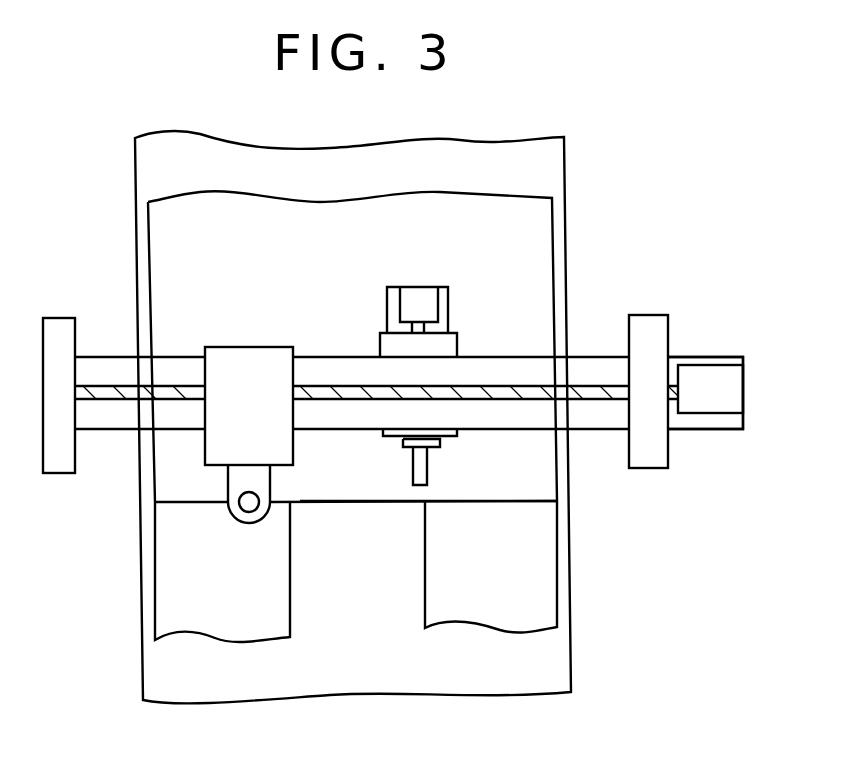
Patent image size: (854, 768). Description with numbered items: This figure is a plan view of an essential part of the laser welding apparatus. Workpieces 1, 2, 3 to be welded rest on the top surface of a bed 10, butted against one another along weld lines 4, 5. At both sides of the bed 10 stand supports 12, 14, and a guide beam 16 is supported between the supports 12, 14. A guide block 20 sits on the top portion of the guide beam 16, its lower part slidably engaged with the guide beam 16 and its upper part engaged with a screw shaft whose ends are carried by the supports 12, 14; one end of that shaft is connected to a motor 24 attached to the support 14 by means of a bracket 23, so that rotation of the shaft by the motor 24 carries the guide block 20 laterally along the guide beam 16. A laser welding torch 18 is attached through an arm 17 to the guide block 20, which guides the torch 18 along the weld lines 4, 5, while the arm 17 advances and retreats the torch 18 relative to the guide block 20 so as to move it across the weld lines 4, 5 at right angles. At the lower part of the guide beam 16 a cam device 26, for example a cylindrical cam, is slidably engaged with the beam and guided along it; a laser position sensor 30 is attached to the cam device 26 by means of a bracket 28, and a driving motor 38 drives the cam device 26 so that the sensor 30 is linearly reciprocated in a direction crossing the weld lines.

The workpiece 1 is at (322, 198).
The workpiece 2 is at (178, 568).
The workpiece 3 is at (545, 588).
The weld line 4 is at (205, 502).
The weld line 5 is at (520, 502).
The bed 10 is at (135, 156).
The support 12 is at (63, 318).
The support 14 is at (650, 315).
The guide beam 16 is at (170, 357).
The arm 17 is at (228, 480).
The laser welding torch 18 is at (250, 512).
The guide block 20 is at (240, 347).
The bracket 23 is at (692, 357).
The motor 24 is at (700, 413).
The cam device 26 is at (457, 345).
The bracket 28 is at (427, 450).
The laser position sensor 30 is at (427, 470).
The driving motor 38 is at (428, 287).